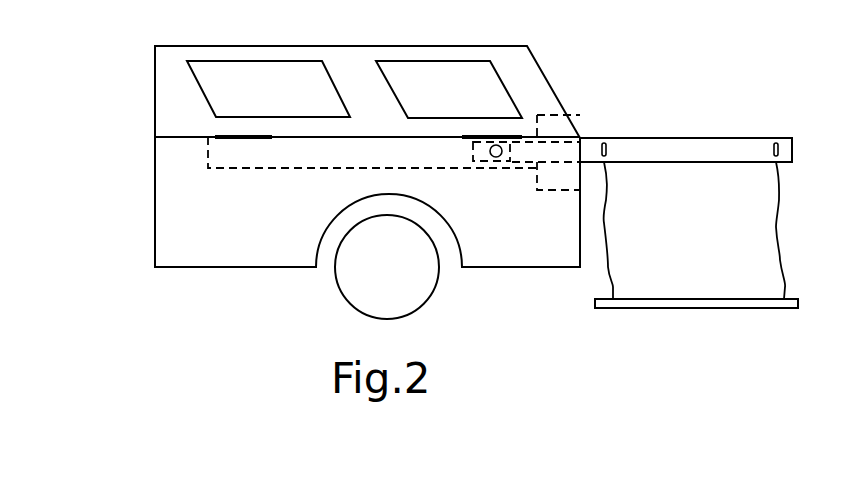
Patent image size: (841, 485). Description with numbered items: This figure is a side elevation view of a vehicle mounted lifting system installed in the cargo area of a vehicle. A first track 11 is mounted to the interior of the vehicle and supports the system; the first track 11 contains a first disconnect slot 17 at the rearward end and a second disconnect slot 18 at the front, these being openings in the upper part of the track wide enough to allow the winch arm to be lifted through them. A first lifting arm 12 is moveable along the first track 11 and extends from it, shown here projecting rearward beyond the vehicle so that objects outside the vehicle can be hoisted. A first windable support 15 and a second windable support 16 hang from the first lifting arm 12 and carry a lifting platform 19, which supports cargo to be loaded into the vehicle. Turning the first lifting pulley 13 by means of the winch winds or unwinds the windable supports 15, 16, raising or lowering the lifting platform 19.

The first track 11 is at (273, 170).
The first lifting arm 12 is at (643, 148).
The first lifting pulley 13 is at (491, 158).
The first windable support 15 is at (605, 224).
The second windable support 16 is at (776, 224).
The first disconnect slot 17 is at (470, 137).
The second disconnect slot 18 is at (260, 137).
The lifting platform 19 is at (688, 308).